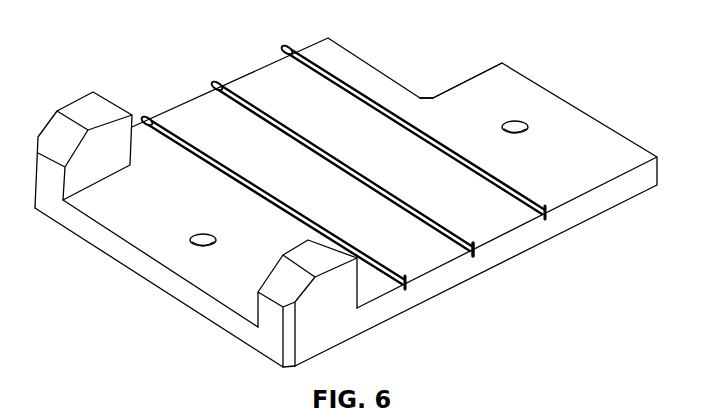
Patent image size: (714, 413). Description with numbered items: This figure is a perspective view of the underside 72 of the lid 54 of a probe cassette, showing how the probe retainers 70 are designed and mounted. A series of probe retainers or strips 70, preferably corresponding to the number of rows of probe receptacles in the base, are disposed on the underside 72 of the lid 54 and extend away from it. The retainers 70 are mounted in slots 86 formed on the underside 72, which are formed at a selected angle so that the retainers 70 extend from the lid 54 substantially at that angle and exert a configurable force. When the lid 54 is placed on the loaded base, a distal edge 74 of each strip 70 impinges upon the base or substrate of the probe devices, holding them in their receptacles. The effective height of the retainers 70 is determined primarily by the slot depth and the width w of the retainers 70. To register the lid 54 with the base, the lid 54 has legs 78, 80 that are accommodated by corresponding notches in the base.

The lid 54 is at (578, 102).
The underside 72 is at (492, 88).
The leg 78 is at (82, 110).
The leg 80 is at (260, 290).
The probe retainer 70 is at (145, 120).
The distal edge 74 is at (175, 123).
The slot 86 is at (543, 220).
The width w is at (476, 258).